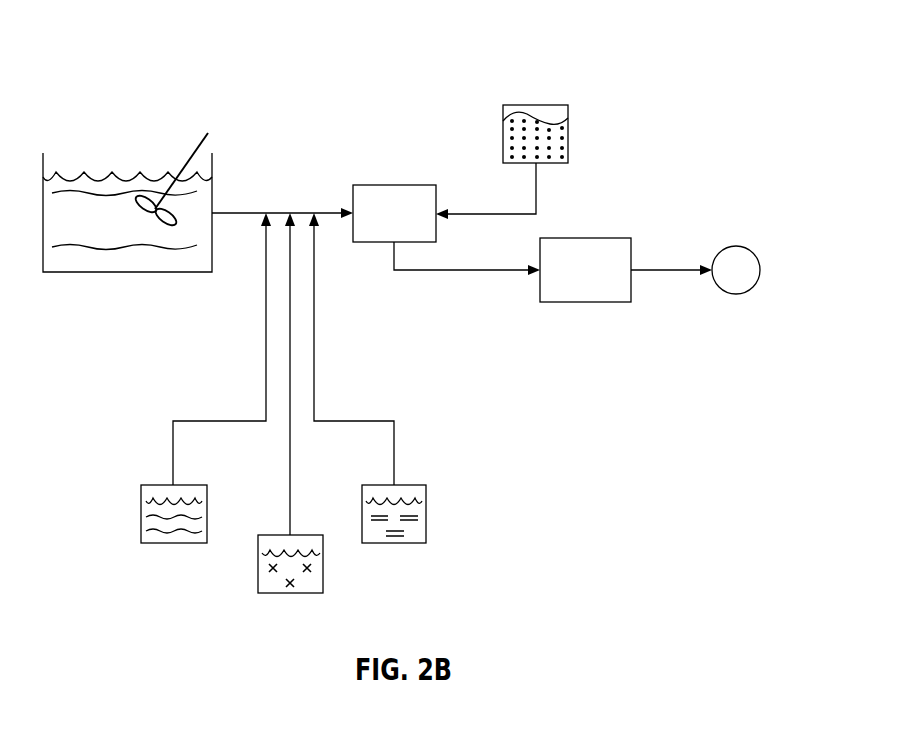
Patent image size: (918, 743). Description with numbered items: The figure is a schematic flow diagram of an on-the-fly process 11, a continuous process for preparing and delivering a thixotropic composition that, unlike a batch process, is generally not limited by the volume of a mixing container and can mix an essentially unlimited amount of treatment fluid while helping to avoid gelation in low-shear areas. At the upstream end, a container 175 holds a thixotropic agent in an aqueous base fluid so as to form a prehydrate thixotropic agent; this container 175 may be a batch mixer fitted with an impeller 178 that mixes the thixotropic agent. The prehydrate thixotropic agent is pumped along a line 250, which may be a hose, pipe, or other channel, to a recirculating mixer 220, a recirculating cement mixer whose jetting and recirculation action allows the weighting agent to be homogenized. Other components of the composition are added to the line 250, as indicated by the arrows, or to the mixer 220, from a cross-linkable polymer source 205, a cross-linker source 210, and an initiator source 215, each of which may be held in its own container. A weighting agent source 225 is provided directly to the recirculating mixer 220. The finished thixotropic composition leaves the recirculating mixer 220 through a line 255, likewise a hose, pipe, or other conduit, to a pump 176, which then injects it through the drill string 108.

The on-the-fly process 11 is at (671, 46).
The container 175 is at (212, 197).
The impeller 178 is at (196, 147).
The line 250 is at (250, 217).
The recirculating mixer 220 is at (377, 242).
The weighting agent source 225 is at (568, 133).
The line 255 is at (478, 270).
The pump 176 is at (600, 238).
The drill string 108 is at (736, 294).
The cross-linkable polymer source 205 is at (160, 484).
The cross-linker source 210 is at (308, 535).
The initiator source 215 is at (411, 485).